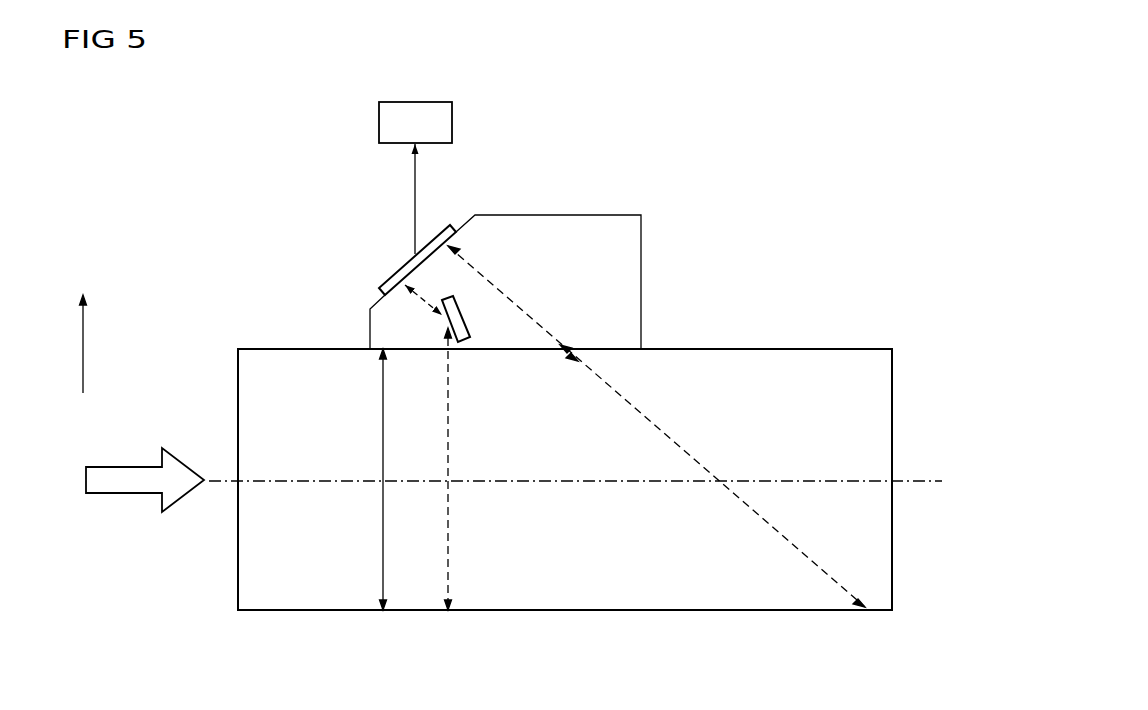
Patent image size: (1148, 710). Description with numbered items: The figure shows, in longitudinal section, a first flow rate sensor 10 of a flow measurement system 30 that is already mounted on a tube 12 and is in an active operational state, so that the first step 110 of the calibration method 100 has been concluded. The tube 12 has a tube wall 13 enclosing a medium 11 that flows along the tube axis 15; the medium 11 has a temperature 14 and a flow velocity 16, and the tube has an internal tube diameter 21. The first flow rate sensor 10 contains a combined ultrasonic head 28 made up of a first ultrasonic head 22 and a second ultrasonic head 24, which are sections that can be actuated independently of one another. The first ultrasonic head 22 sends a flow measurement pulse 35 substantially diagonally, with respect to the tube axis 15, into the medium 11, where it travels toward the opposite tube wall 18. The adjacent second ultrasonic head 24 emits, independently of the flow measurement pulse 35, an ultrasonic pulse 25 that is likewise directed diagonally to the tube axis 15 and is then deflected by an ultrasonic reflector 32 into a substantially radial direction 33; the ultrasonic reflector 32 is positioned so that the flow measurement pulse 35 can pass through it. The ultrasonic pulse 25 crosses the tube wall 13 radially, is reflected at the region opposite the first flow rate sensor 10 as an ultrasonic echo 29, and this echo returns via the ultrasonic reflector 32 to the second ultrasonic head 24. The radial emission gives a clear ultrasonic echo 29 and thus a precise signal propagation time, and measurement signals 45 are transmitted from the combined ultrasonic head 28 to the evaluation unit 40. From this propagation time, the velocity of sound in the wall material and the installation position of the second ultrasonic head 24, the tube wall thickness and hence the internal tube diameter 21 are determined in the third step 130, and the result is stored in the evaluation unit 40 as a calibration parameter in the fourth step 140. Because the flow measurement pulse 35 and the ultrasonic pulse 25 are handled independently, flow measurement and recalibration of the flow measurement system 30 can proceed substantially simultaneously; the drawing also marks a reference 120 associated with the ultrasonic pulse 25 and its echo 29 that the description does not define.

The first flow rate sensor 10 is at (385, 328).
The medium 11 is at (143, 456).
The tube 12 is at (269, 611).
The tube wall 13 is at (837, 611).
The temperature 14 is at (143, 456).
The tube axis 15 is at (923, 483).
The flow velocity 16 is at (128, 465).
The tube wall 18 is at (532, 611).
The internal tube diameter 21 is at (383, 412).
The first ultrasonic head 22 is at (359, 260).
The second ultrasonic head 24 is at (359, 260).
The ultrasonic pulse 25 is at (524, 469).
The combined ultrasonic head 28 is at (400, 272).
The ultrasonic echo 29 is at (524, 469).
The flow measurement system 30 is at (135, 98).
The ultrasonic reflector 32 is at (464, 342).
The radial direction 33 is at (83, 338).
The flow measurement pulse 35 is at (648, 420).
The evaluation unit 40 is at (499, 122).
The measurement signals 45 is at (415, 172).
The method 100 is at (135, 98).
The first step 110 is at (198, 110).
The reference axis 120 is at (448, 520).
The third step 130 is at (499, 122).
The fourth step 140 is at (452, 119).